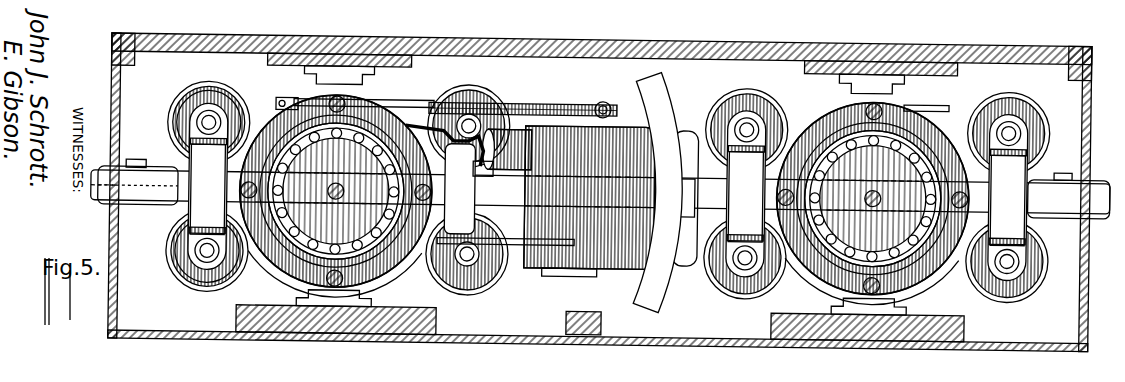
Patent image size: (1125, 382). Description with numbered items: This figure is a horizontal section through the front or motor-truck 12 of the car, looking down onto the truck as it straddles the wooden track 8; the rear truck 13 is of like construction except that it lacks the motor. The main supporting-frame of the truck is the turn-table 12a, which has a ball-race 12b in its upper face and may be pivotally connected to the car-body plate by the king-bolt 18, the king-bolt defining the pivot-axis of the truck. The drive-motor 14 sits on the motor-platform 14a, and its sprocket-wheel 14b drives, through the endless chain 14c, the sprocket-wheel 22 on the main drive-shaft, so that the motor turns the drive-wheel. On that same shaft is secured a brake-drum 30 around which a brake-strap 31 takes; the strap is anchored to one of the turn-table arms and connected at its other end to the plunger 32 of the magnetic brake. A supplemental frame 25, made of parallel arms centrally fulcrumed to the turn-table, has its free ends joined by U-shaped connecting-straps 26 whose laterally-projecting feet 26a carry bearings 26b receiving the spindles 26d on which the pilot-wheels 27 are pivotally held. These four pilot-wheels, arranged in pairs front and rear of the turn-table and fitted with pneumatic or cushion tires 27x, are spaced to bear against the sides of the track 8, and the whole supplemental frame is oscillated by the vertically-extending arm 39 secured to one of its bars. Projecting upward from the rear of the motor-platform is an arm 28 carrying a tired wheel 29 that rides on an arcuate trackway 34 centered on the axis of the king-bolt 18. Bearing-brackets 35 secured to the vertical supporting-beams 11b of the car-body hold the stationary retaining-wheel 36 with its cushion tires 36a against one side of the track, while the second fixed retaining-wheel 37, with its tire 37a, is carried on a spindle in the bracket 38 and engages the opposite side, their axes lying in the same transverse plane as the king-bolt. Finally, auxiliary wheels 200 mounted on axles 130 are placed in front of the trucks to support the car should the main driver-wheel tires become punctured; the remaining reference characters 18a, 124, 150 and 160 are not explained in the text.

The track 8 is at (597, 206).
The vertical supporting-beams 11b is at (300, 26).
The motor-truck 12 is at (247, 74).
The turn-table 12a is at (604, 194).
The ball-race 12b is at (604, 195).
The rear truck 13 is at (989, 86).
The drive-motor 14 is at (590, 198).
The motor-platform 14a is at (568, 281).
The sprocket-wheel 14b is at (613, 103).
The endless chain 14c is at (523, 99).
The king-bolt 18 is at (615, 195).
The ball bearing ring 18a is at (604, 194).
The sprocket-wheel 22 is at (287, 94).
The supplemental frame 25 is at (604, 194).
The U-shaped connecting-straps 26 is at (608, 192).
The laterally-projecting feet 26a is at (606, 203).
The bearings 26b is at (946, 224).
The spindles 26d is at (632, 211).
The pilot-wheels 27 is at (606, 190).
The pneumatic or cushion tires 27x is at (189, 185).
The arm 28 is at (604, 195).
The wheel 29 is at (678, 199).
The brake-drum 30 is at (507, 149).
The brake-strap 31 is at (444, 137).
The plunger 32 is at (471, 165).
The trackway 34 is at (658, 192).
The bearing-brackets 35 is at (740, 46).
The retaining-wheel 36 is at (300, 64).
The pneumatic or cushion tires 36a is at (678, 96).
The second fixed retaining-wheel 37 is at (599, 298).
The tire 37a is at (602, 282).
The bracket 38 is at (600, 323).
The vertically-extending arm 39 is at (225, 50).
The rod 124 is at (506, 215).
The axles 130 is at (802, 108).
The shaft boss 150 is at (139, 152).
The shaft boss 160 is at (1062, 168).
The wheels 200 is at (607, 204).